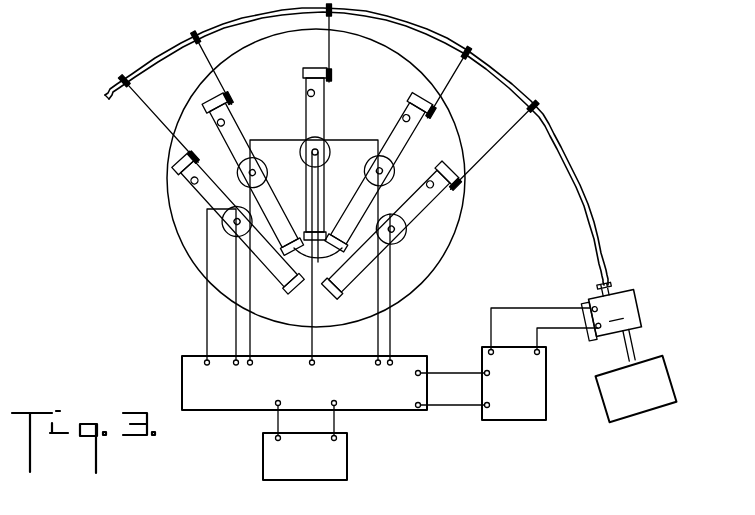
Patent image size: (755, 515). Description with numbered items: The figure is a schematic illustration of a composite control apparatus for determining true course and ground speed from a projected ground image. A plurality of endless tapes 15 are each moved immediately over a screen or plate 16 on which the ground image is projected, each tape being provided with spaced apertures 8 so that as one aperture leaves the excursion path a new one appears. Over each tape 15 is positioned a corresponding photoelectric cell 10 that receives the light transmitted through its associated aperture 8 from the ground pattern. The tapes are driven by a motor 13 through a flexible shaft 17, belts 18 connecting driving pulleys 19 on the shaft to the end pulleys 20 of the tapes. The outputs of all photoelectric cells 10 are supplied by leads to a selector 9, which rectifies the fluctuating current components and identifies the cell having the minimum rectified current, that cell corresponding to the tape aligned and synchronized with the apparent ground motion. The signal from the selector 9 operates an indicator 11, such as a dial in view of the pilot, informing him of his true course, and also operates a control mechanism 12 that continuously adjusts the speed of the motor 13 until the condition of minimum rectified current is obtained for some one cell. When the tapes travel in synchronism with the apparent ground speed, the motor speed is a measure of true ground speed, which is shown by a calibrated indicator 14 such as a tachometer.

The aperture 8 is at (196, 172).
The selector 9 is at (182, 393).
The photoelectric cell 10 is at (236, 233).
The indicator 11 is at (263, 457).
The control mechanism 12 is at (548, 401).
The motor 13 is at (629, 304).
The ground speed indicator 14 is at (662, 365).
The endless tape 15 is at (236, 152).
The screen or plate 16 is at (434, 266).
The flexible shaft 17 is at (556, 143).
The belt 18 is at (206, 56).
The driving pulley 19 is at (326, 14).
The end pulley 20 is at (176, 163).